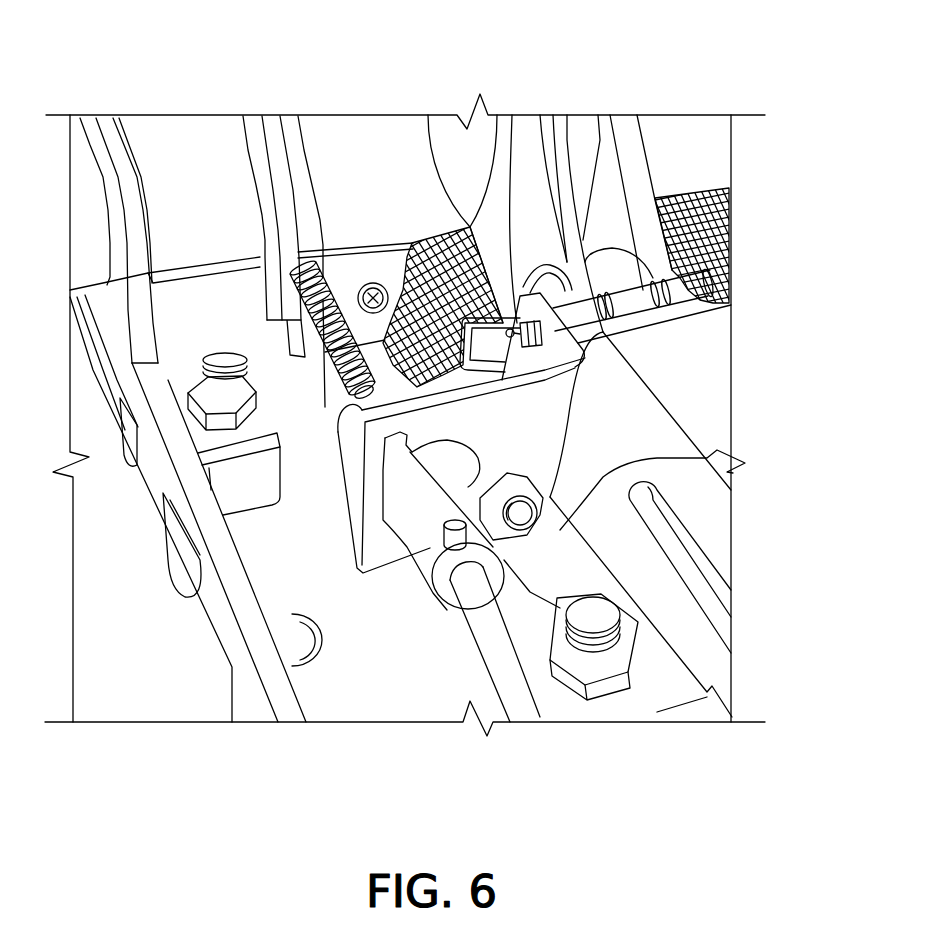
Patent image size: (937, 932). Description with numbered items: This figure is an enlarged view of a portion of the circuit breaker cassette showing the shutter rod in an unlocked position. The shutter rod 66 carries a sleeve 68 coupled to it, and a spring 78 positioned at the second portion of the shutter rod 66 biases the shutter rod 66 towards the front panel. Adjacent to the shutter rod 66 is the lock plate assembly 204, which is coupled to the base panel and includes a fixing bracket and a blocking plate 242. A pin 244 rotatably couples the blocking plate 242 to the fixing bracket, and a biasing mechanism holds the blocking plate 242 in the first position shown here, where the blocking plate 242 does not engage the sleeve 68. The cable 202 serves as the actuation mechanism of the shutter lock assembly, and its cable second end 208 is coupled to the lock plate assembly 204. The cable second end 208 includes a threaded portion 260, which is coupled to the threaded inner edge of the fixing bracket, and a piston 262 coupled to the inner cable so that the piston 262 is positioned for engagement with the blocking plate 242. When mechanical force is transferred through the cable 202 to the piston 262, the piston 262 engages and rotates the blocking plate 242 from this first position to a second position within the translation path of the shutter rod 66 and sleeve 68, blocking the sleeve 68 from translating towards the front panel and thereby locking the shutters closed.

The spring 78 is at (300, 115).
The blocking plate 242 is at (420, 400).
The piston 262 is at (431, 125).
The threaded portion 260 is at (522, 310).
The cable second end 208 is at (613, 272).
The cable 202 is at (729, 268).
The lock plate assembly 204 is at (632, 408).
The pin 244 is at (733, 473).
The sleeve 68 is at (423, 540).
The shutter rod 66 is at (513, 667).